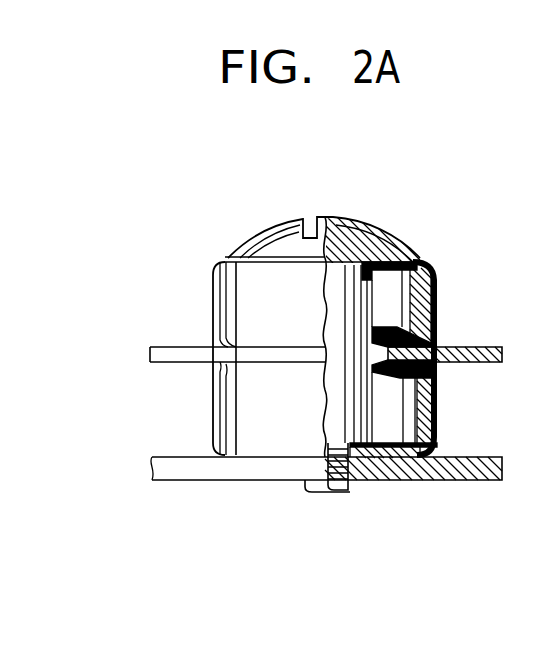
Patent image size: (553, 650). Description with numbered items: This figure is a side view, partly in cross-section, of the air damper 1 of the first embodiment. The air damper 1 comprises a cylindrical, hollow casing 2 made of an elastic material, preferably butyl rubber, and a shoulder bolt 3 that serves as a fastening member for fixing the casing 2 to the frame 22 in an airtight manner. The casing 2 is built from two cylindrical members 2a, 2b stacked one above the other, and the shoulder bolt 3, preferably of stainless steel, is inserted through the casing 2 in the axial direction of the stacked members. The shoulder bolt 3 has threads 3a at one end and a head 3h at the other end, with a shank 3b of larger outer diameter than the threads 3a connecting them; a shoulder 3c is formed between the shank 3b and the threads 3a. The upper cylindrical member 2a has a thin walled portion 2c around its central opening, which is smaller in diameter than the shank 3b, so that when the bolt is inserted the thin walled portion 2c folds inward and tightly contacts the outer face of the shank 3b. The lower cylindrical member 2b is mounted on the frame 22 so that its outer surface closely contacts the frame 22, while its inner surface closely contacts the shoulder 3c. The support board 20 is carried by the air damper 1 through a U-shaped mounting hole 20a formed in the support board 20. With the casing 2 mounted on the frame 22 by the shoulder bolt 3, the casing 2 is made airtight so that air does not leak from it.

The air damper 1 is at (444, 243).
The casing 2 is at (203, 293).
The cylindrical member 2a is at (437, 310).
The cylindrical member 2b is at (437, 423).
The thin walled portion 2c is at (378, 255).
The shoulder bolt 3 is at (345, 208).
The threads 3a is at (340, 492).
The shank 3b is at (350, 305).
The shoulder 3c is at (333, 423).
The head 3h is at (280, 242).
The support board 20 is at (500, 354).
The mounting hole 20a is at (437, 382).
The frame 22 is at (473, 481).